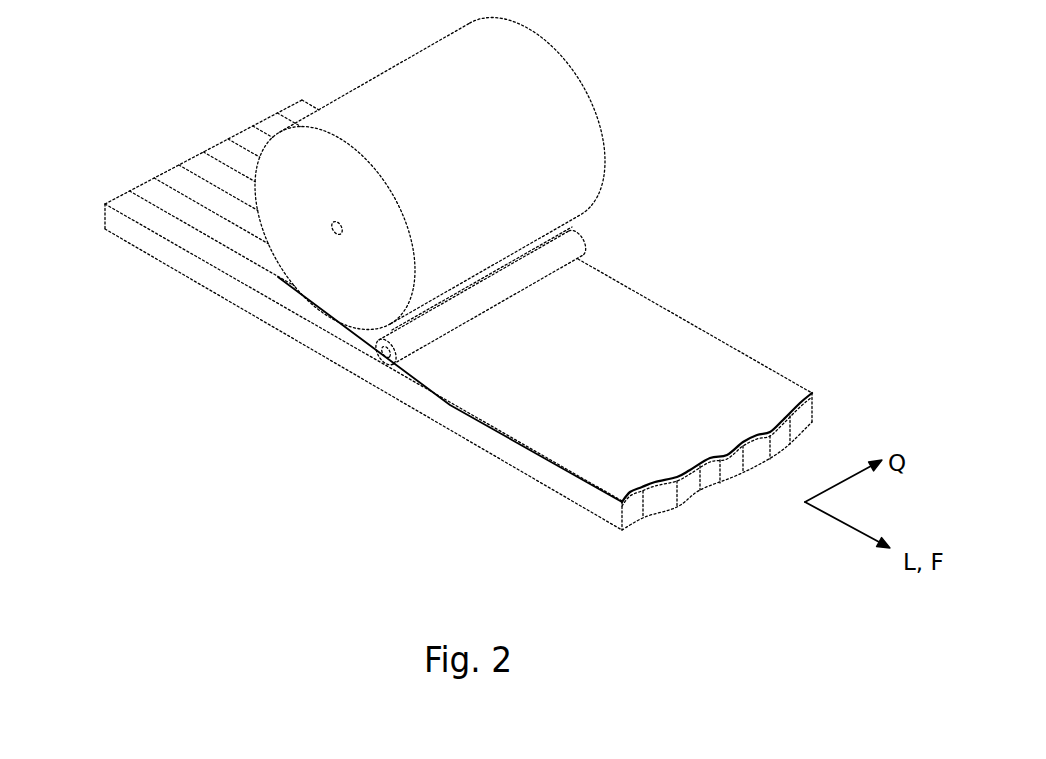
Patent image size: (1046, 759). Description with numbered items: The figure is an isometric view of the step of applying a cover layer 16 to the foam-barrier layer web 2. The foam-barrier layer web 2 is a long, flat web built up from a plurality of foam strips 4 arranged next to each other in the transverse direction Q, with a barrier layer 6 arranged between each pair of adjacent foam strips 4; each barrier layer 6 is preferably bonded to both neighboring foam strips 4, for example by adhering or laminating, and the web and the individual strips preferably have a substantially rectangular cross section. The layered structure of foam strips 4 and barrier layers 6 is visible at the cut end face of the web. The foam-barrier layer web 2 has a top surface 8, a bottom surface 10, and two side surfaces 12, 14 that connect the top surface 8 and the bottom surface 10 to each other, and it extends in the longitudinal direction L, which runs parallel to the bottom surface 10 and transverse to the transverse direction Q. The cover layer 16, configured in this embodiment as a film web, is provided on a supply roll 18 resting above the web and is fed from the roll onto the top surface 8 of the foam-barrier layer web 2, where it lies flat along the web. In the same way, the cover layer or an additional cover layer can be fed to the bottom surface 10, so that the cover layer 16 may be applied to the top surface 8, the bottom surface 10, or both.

The foam-barrier layer web 2 is at (122, 143).
The foam strips 4 is at (665, 493).
The barrier layer 6 is at (783, 423).
The top surface 8 is at (245, 147).
The bottom surface 10 is at (145, 256).
The side surface 12 is at (303, 328).
The side surface 14 is at (713, 335).
The cover layer 16 is at (473, 390).
The supply roll 18 is at (553, 115).